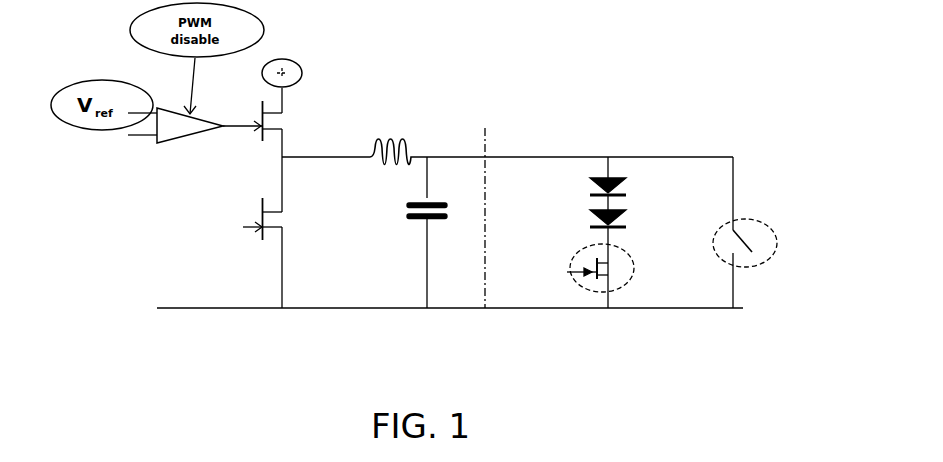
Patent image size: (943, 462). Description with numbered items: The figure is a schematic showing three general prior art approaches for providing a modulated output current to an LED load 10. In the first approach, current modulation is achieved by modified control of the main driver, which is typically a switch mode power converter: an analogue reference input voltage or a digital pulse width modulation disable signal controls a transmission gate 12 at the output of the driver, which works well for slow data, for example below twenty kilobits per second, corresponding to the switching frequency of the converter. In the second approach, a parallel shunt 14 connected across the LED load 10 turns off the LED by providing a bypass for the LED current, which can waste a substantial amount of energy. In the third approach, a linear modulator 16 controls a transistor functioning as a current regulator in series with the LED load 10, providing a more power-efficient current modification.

The LED load 10 is at (618, 179).
The transmission gate 12 is at (317, 122).
The parallel shunt 14 is at (770, 233).
The linear modulator 16 is at (634, 264).